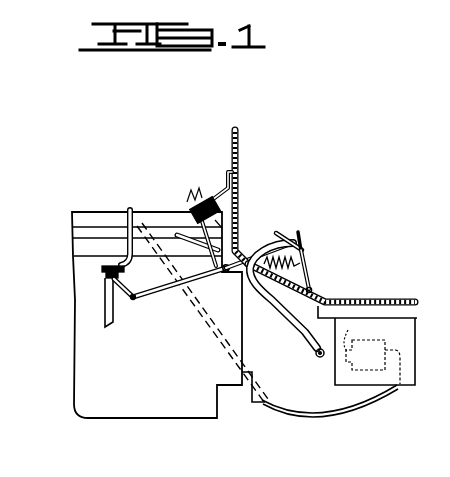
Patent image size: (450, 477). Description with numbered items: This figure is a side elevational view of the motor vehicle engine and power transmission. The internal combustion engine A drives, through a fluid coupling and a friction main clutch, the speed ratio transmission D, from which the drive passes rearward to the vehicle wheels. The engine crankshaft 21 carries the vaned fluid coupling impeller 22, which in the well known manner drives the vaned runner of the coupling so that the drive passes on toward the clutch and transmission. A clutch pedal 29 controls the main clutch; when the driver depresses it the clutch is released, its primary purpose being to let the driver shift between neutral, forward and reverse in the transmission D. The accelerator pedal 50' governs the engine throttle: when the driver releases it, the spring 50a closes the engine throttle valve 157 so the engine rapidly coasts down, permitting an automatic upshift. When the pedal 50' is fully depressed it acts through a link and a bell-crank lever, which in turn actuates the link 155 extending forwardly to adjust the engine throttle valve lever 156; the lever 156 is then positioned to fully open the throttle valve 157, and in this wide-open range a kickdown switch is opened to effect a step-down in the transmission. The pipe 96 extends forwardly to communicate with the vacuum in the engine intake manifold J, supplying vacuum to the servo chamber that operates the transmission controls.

The engine intake manifold J is at (95, 246).
The internal combustion engine A is at (138, 408).
The speed ratio transmission D is at (278, 388).
The vaned fluid coupling impeller 22 is at (314, 197).
The engine crankshaft 21 is at (348, 313).
The clutch pedal 29 is at (300, 250).
The spring 50a is at (306, 246).
The accelerator pedal 50' is at (310, 271).
The link 155 is at (188, 275).
The engine throttle valve lever 156 is at (69, 302).
The throttle valve 157 is at (103, 281).
The pipe 96 is at (207, 353).